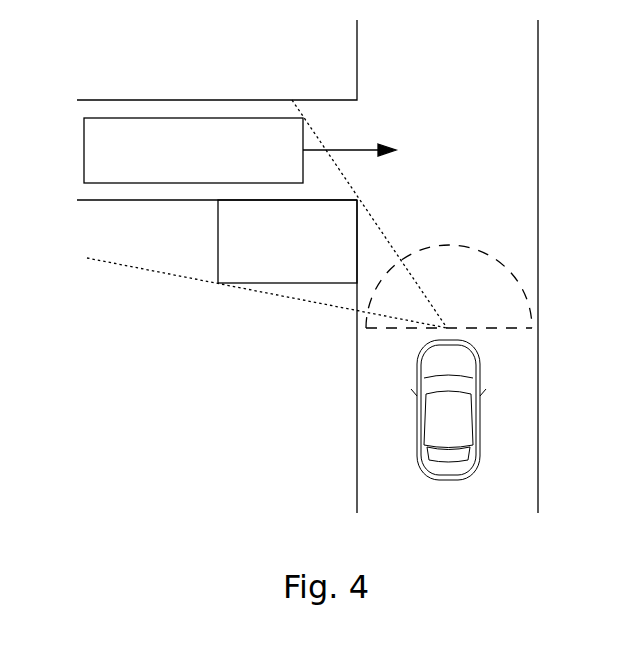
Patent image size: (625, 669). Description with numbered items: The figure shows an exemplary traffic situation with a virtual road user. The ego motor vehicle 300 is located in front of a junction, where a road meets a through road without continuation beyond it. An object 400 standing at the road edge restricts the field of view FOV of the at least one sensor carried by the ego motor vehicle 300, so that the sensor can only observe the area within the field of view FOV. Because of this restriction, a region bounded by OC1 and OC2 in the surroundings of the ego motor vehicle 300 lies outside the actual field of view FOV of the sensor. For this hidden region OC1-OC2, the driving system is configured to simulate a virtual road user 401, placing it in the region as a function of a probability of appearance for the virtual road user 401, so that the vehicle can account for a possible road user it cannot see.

The virtual road user 401 is at (193, 150).
The object 400 is at (287, 241).
The ego motor vehicle 300 is at (448, 430).
The region boundary OC1 is at (248, 293).
The region boundary OC2 is at (369, 214).
The field of view FOV is at (449, 286).